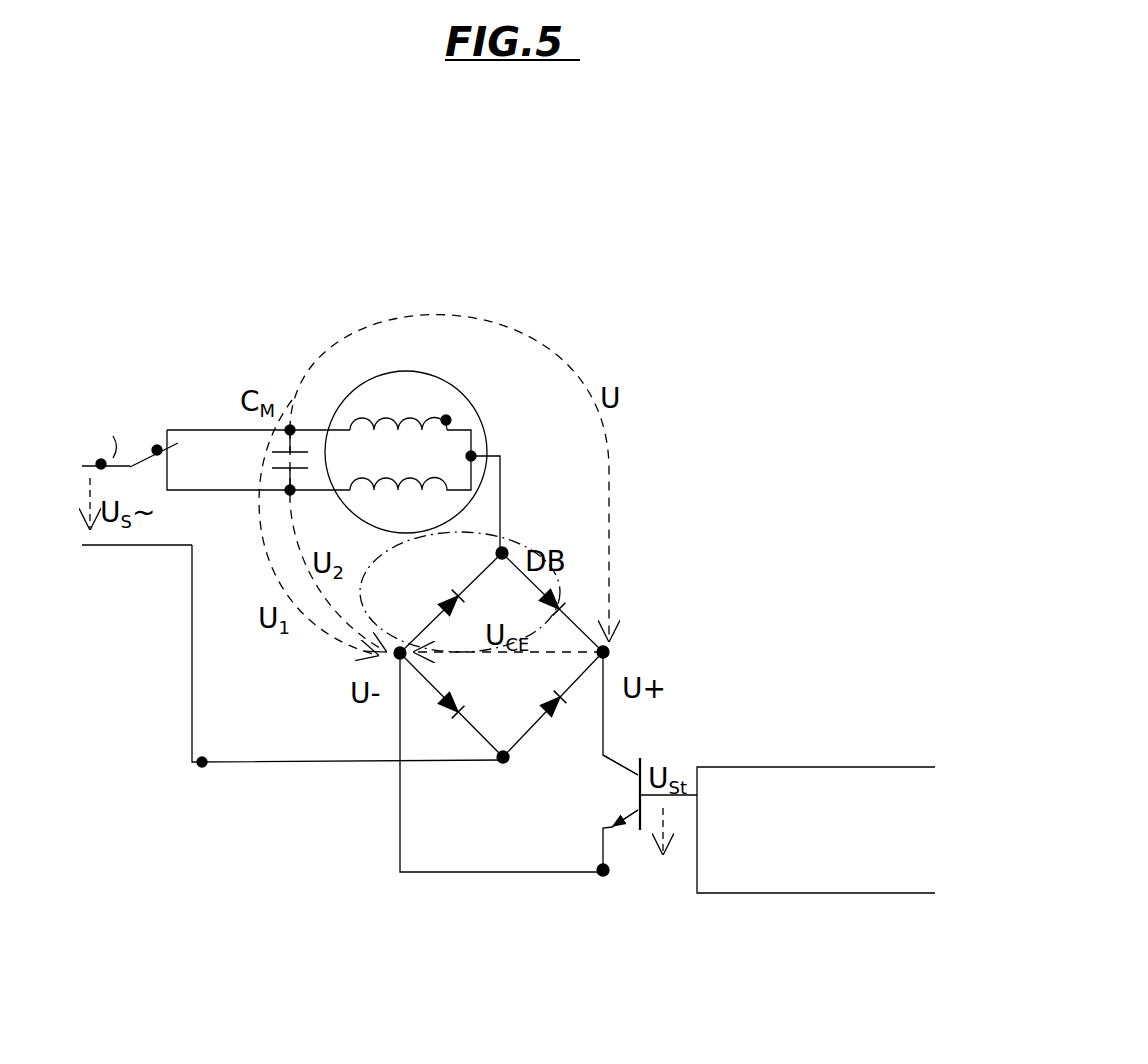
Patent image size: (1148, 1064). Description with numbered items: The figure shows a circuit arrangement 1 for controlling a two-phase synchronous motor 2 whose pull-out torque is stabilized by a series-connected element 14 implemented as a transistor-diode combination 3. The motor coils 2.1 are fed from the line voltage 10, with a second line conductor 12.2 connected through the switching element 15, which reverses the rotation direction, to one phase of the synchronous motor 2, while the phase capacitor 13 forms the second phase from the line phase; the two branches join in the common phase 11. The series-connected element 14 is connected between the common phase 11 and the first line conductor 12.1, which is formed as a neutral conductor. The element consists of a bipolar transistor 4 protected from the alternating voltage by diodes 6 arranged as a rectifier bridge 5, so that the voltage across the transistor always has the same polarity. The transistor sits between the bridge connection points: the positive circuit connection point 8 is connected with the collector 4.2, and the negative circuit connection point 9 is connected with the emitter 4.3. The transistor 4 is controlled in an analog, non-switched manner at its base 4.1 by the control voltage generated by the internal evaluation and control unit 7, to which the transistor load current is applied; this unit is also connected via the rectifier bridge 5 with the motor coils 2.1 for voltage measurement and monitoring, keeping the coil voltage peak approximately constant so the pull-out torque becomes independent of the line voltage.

The circuit arrangement 1 is at (757, 420).
The synchronous motor 2 is at (482, 475).
The motor coils 2.1 is at (446, 420).
The transistor-diode combination 3 is at (587, 697).
The series-connected element 14 is at (587, 697).
The transistor 4 is at (614, 793).
The base 4.1 is at (697, 792).
The collector 4.2 is at (649, 756).
The emitter 4.3 is at (630, 832).
The rectifier bridge 5 is at (493, 744).
The diodes 6 is at (448, 722).
The evaluation and control unit 7 is at (775, 878).
The circuit connection point U+ 8 is at (620, 651).
The circuit connection point U− 9 is at (387, 665).
The line voltage 10 is at (123, 533).
The common phase 11 is at (506, 509).
The first line conductor 12.1 is at (202, 762).
The second line conductor 12.2 is at (100, 462).
The phase capacitor 13 is at (275, 450).
The switching element 15 is at (156, 448).